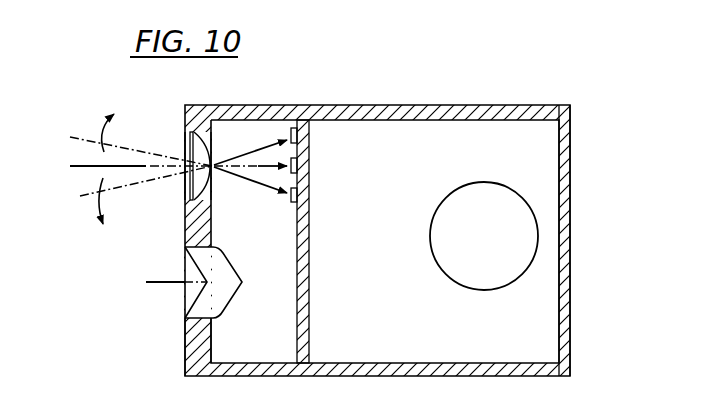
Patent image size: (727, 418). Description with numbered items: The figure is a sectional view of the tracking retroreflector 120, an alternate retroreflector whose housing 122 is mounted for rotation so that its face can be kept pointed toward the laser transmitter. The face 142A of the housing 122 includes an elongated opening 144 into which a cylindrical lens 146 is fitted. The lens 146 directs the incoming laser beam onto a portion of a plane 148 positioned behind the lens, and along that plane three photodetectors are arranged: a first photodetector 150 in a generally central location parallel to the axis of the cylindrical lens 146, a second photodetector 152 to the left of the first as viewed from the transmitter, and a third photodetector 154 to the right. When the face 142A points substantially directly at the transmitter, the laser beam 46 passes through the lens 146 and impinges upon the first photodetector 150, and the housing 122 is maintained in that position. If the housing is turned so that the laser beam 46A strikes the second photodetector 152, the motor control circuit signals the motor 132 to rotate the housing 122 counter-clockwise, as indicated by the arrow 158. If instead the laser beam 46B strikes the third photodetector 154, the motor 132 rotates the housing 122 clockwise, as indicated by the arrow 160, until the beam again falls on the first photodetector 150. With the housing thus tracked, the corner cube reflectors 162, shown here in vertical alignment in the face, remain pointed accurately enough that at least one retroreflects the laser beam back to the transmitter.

The tracking retroreflector 120 is at (381, 209).
The housing 122 is at (570, 150).
The motor 132 is at (478, 290).
The face 142A is at (190, 355).
The elongated opening 144 is at (190, 134).
The cylindrical lens 146 is at (212, 152).
The plane 148 is at (290, 270).
The first photodetector 150 is at (297, 165).
The second photodetector 152 is at (297, 135).
The third photodetector 154 is at (297, 195).
The arrow 158 is at (103, 206).
The arrow 160 is at (103, 142).
The corner cube reflector 162 is at (202, 305).
The laser beam 46 is at (77, 163).
The laser beam 46A is at (82, 196).
The laser beam 46B is at (78, 136).